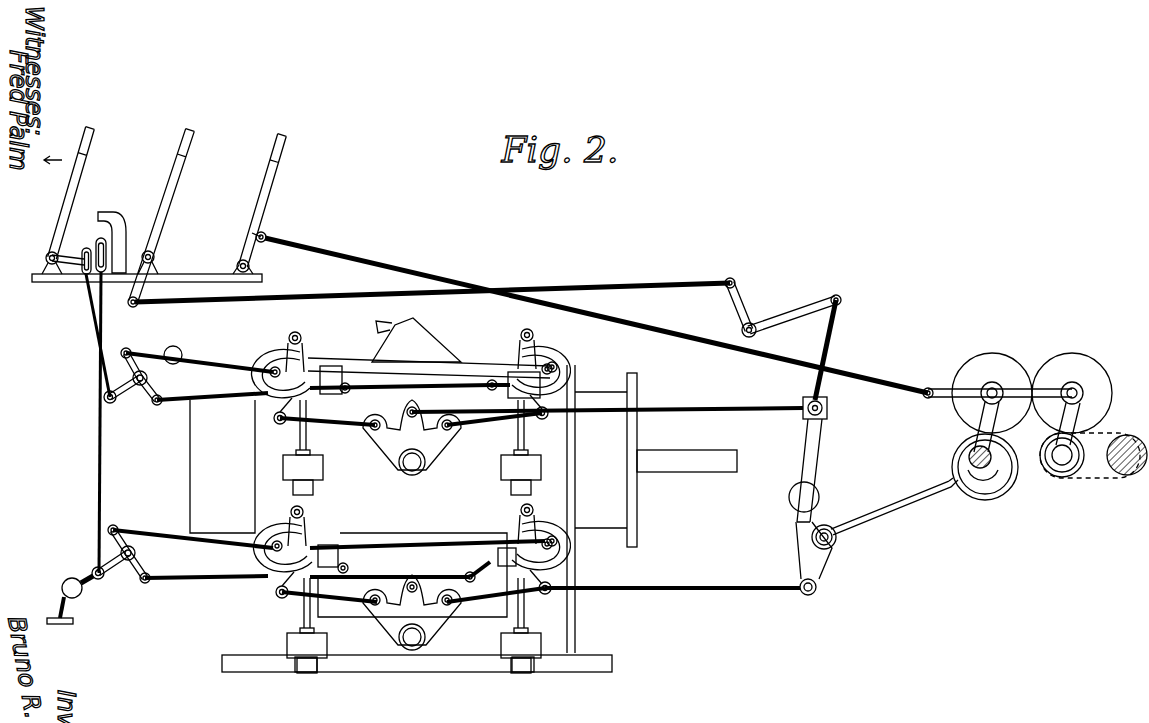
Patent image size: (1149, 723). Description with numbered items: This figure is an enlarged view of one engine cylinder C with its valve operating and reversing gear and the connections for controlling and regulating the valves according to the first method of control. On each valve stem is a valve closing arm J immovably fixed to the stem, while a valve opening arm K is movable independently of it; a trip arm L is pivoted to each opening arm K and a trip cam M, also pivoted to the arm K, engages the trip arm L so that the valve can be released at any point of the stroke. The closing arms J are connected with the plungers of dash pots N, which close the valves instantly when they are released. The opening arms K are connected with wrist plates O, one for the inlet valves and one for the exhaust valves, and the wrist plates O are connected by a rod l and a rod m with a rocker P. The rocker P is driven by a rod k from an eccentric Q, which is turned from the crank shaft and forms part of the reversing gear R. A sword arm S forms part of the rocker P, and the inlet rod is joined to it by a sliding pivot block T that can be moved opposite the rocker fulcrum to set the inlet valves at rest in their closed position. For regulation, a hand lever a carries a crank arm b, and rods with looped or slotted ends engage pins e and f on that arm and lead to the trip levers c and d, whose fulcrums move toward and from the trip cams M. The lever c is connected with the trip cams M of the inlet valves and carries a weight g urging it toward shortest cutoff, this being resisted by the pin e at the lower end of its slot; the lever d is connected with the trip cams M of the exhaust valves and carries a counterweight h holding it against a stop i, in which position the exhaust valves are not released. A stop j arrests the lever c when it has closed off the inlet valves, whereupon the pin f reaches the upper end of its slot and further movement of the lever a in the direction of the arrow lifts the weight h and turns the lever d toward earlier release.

The hand lever a is at (72, 201).
The stop j is at (113, 212).
The lever v is at (168, 201).
The pin f is at (86, 256).
The pin e is at (106, 258).
The crank arm b is at (78, 264).
The weight g is at (171, 348).
The trip lever c is at (134, 386).
The trip lever d is at (126, 565).
The counterweight h is at (70, 579).
The stop i is at (54, 611).
The trip cams M is at (256, 357).
The valve opening arms K is at (288, 339).
The valve closing arms J is at (322, 364).
The trip arms L is at (340, 390).
The dash pots N is at (323, 471).
The wrist plates O is at (412, 525).
The cylinder C is at (348, 508).
The rod l is at (673, 407).
The sliding pivot block T is at (828, 410).
The sword arm S is at (815, 443).
The rocker P is at (800, 548).
The rod k is at (878, 513).
The rod m is at (665, 588).
The reversing gear R is at (1035, 403).
The eccentric Q is at (968, 492).